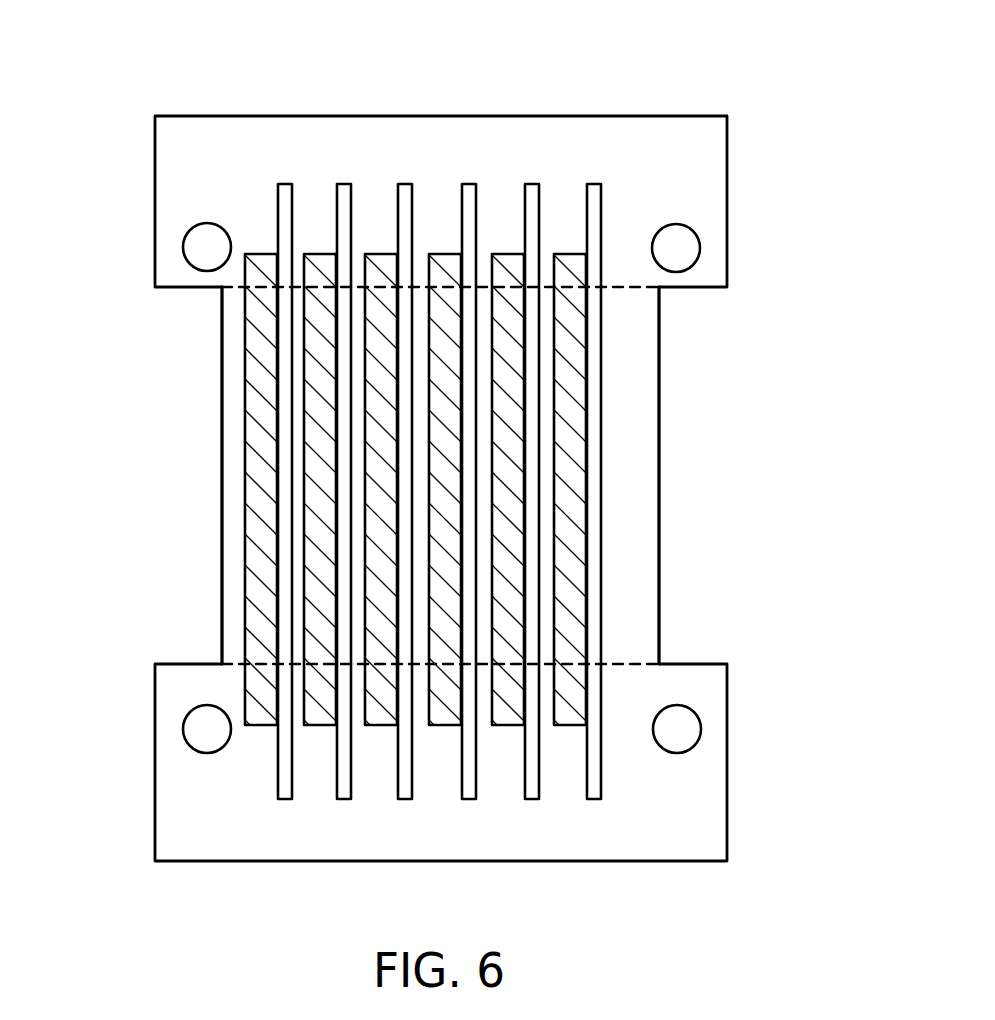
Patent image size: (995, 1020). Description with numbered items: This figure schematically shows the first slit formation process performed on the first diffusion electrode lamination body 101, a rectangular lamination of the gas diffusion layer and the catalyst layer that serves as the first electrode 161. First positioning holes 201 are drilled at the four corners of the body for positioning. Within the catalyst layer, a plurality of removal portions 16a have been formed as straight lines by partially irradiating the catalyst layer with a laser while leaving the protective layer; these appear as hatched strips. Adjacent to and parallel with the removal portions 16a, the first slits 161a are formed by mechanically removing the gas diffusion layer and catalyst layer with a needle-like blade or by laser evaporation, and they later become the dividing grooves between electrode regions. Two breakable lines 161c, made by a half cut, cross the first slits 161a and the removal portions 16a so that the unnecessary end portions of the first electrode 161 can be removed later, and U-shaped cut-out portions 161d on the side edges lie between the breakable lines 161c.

The first diffusion electrode lamination body 101 is at (207, 137).
The first electrode 161 is at (389, 446).
The first slits 161a is at (592, 190).
The breakable lines 161c is at (642, 288).
The cut-out portions 161d is at (168, 492).
The removal portions 16a is at (382, 505).
The first positioning holes 201 is at (207, 248).